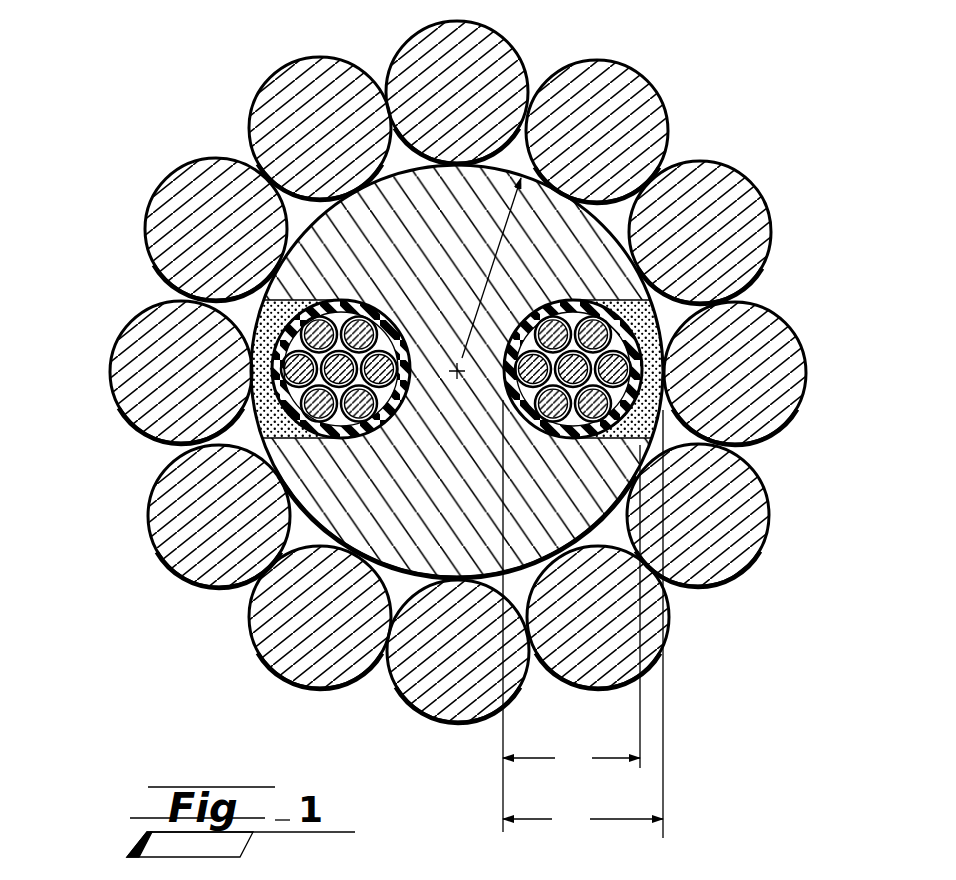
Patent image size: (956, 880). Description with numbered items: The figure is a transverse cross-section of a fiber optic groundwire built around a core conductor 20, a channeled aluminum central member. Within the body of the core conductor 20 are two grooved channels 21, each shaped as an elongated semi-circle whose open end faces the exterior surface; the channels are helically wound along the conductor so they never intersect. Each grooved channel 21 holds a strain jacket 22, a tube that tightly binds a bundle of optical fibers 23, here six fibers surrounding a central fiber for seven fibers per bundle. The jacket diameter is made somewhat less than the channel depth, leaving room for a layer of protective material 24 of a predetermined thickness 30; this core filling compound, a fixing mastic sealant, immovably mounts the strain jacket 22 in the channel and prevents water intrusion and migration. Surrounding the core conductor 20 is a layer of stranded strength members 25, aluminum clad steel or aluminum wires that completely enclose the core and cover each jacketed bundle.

The core conductor 20 is at (728, 172).
The grooved channel 21 is at (282, 290).
The strain jacket 22 is at (272, 298).
The bundle of optical fibers 23 is at (258, 416).
The protective material 24 is at (280, 437).
The strength members 25 is at (283, 98).
The predetermined thickness 30 is at (598, 718).